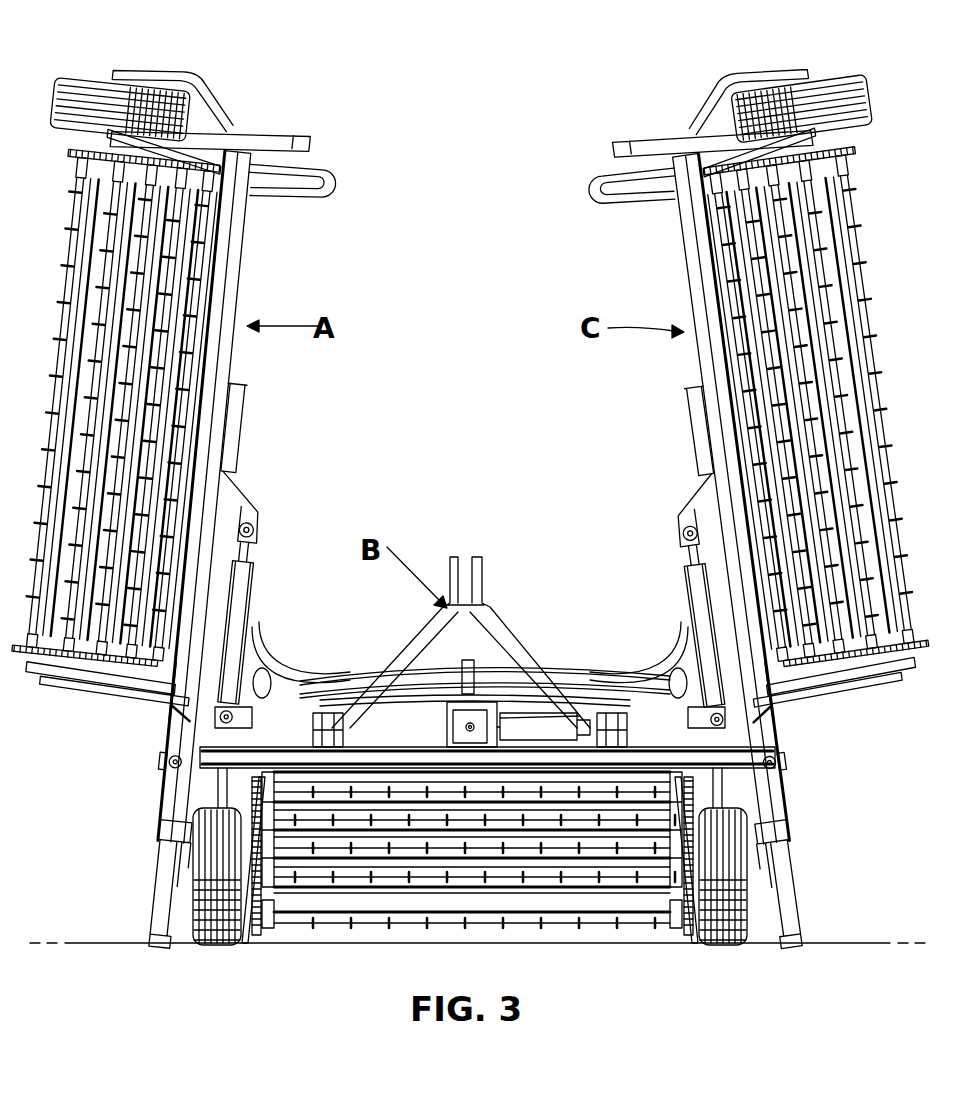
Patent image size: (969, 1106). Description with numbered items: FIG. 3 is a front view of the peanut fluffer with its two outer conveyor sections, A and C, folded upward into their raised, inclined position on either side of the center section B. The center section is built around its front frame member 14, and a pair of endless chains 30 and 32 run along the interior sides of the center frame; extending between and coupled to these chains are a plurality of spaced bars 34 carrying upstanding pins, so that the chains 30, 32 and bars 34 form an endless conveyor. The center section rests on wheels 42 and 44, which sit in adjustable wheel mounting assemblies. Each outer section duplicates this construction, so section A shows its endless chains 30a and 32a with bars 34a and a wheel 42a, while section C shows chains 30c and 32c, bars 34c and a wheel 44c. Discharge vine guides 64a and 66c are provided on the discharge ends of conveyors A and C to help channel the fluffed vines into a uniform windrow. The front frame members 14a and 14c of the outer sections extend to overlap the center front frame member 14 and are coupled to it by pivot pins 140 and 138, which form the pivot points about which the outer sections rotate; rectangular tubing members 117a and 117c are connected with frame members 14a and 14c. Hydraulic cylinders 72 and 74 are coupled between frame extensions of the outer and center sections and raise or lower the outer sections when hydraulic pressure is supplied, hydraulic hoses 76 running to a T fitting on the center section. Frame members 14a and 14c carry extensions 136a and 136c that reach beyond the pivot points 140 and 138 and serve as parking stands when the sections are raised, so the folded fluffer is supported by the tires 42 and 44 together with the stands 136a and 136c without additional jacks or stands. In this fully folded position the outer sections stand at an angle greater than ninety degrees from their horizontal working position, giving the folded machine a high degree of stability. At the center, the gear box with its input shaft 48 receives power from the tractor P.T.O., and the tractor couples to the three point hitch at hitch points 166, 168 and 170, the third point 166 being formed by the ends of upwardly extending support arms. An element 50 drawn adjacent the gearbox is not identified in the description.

The front frame member 14 is at (397, 768).
The front frame member of section A 14a is at (246, 255).
The front frame member of section C 14c is at (688, 256).
The endless chain 30 is at (256, 936).
The endless chain of section A 30a is at (70, 152).
The endless chain of section C 30c is at (918, 650).
The endless chain 32 is at (688, 938).
The endless chain of section A 32a is at (20, 655).
The endless chain of section C 32c is at (853, 149).
The spaced bars 34 is at (403, 922).
The spaced bars of section A 34a is at (67, 277).
The spaced bars of section C 34c is at (857, 264).
The wheel 42 is at (216, 946).
The wheel of section A 42a is at (90, 80).
The wheel 44 is at (733, 946).
The wheel of section C 44c is at (843, 83).
The gearbox input shaft 48 is at (463, 727).
The drawbar cylinder 50 is at (588, 718).
The discharge vine guide 64a is at (320, 170).
The discharge vine guide 66c is at (620, 170).
The hydraulic cylinder 72 is at (240, 590).
The hydraulic cylinder 74 is at (692, 589).
The hydraulic hoses 76 is at (530, 688).
The rectangular tubing member 117a is at (233, 435).
The rectangular tubing member 117c is at (697, 434).
The extension 136a is at (160, 902).
The extension 136c is at (790, 878).
The pivot pin 138 is at (772, 762).
The pivot pin 140 is at (173, 770).
The third hitch point 166 is at (472, 558).
The hitch point 168 is at (318, 730).
The hitch point 170 is at (640, 731).